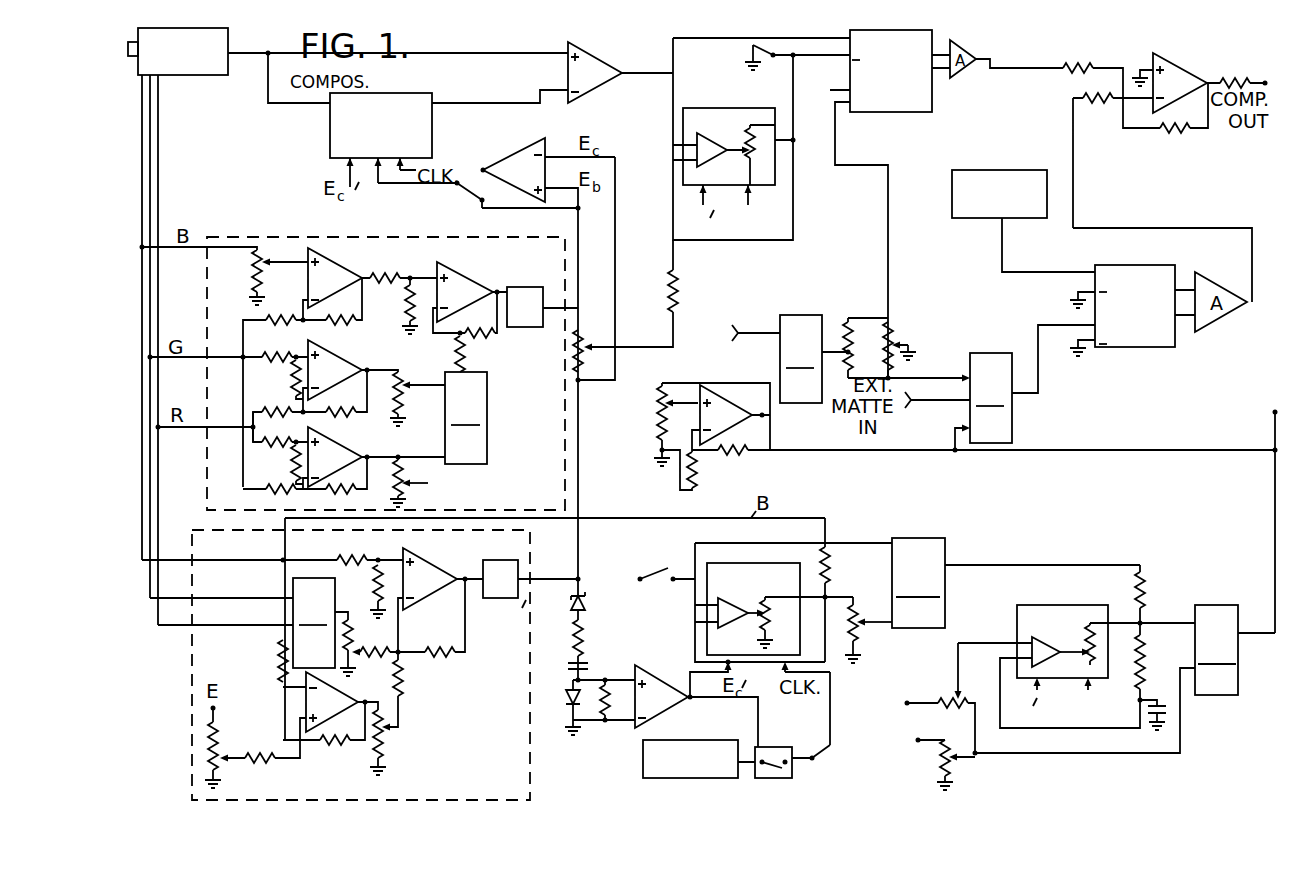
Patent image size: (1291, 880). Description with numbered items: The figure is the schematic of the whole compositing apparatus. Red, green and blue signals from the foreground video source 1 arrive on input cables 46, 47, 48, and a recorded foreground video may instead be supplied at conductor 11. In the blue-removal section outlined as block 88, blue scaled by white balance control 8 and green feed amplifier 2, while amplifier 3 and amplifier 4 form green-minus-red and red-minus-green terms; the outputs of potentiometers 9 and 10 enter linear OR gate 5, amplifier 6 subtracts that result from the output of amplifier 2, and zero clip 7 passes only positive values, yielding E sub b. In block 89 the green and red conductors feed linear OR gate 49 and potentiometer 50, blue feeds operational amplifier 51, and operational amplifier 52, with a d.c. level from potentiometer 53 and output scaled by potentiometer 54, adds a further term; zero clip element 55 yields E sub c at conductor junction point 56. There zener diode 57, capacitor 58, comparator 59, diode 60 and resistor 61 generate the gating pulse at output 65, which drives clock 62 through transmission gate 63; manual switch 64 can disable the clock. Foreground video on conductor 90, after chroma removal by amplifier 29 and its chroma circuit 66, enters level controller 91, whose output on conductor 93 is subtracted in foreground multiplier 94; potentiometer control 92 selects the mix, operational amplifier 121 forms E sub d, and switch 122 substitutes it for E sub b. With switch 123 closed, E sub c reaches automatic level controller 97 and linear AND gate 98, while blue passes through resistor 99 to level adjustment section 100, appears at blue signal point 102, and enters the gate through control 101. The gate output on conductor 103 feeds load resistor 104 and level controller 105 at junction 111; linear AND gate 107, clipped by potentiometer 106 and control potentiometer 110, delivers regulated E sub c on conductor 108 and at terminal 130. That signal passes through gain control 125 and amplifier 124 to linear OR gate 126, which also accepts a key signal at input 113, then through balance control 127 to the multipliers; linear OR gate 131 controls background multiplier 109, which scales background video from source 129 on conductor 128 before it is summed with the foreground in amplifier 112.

The foreground video source 1 is at (190, 75).
The conductor 11 is at (262, 56).
The chroma circuit 66 is at (412, 97).
The amplifier 29 is at (600, 57).
The conductor 90 is at (646, 78).
The comparator digital memory level controller 91 is at (708, 110).
The conductor 93 is at (793, 140).
The foreground multiplier 94 is at (893, 112).
The amplifier 112 is at (1182, 73).
The background video source 129 is at (1007, 162).
The conductor 128 is at (1052, 266).
The background multiplier 109 is at (1143, 347).
The linear OR gate 131 is at (988, 353).
The operational amplifier 121 is at (521, 157).
The switch 122 is at (457, 201).
The color difference detector block 88 is at (293, 243).
The amplifier 2 is at (341, 265).
The white balance control 8 is at (225, 276).
The amplifier 6 is at (461, 286).
The zero clip 7 is at (524, 288).
The potentiometer control 92 is at (590, 360).
The key input 113 is at (734, 333).
The linear OR gate 126 is at (795, 315).
The balance control 127 is at (896, 340).
The amplifier 3 is at (340, 357).
The potentiometer 9 is at (417, 392).
The linear OR gate 5 is at (488, 390).
The operational amplifier 124 is at (727, 390).
The gain control 125 is at (661, 425).
The output terminal 130 is at (1275, 410).
The amplifier 4 is at (340, 446).
The potentiometer 10 is at (422, 470).
The conductor 46 is at (214, 550).
The conductor 47 is at (221, 585).
The conductor 48 is at (225, 615).
The linear OR gate 49 is at (327, 651).
The potentiometer 50 is at (370, 633).
The operational amplifier 51 is at (383, 597).
The zero clip element 55 is at (519, 561).
The detector block 89 is at (534, 554).
The conductor junction point 56 is at (590, 581).
The switch 123 is at (667, 564).
The automatic level controller 97 is at (752, 560).
The resistor 99 is at (839, 590).
The linear AND gate 98 is at (916, 540).
The conductor 103 is at (998, 566).
The load resistor 104 is at (1152, 572).
The level controller 105 is at (1050, 606).
The linear AND gate 107 is at (1210, 605).
The operational amplifier 52 is at (299, 701).
The potentiometer 54 is at (393, 727).
The zener diode 57 is at (594, 601).
The capacitor 58 is at (588, 655).
The comparator 59 is at (683, 689).
The output 65 is at (715, 721).
The level adjustment section 100 is at (783, 622).
The blue signal point 102 is at (833, 603).
The level adjustment control 101 is at (873, 630).
The conductor junction 111 is at (1147, 621).
The conductor 108 is at (1250, 664).
The control potentiometer 110 is at (931, 699).
The diode 60 is at (586, 707).
The resistor 61 is at (604, 733).
The clock 62 is at (707, 740).
The transmission gate 63 is at (756, 748).
The manual switch 64 is at (811, 740).
The clip level adjustment potentiometer 106 is at (950, 757).
The potentiometer 53 is at (222, 775).